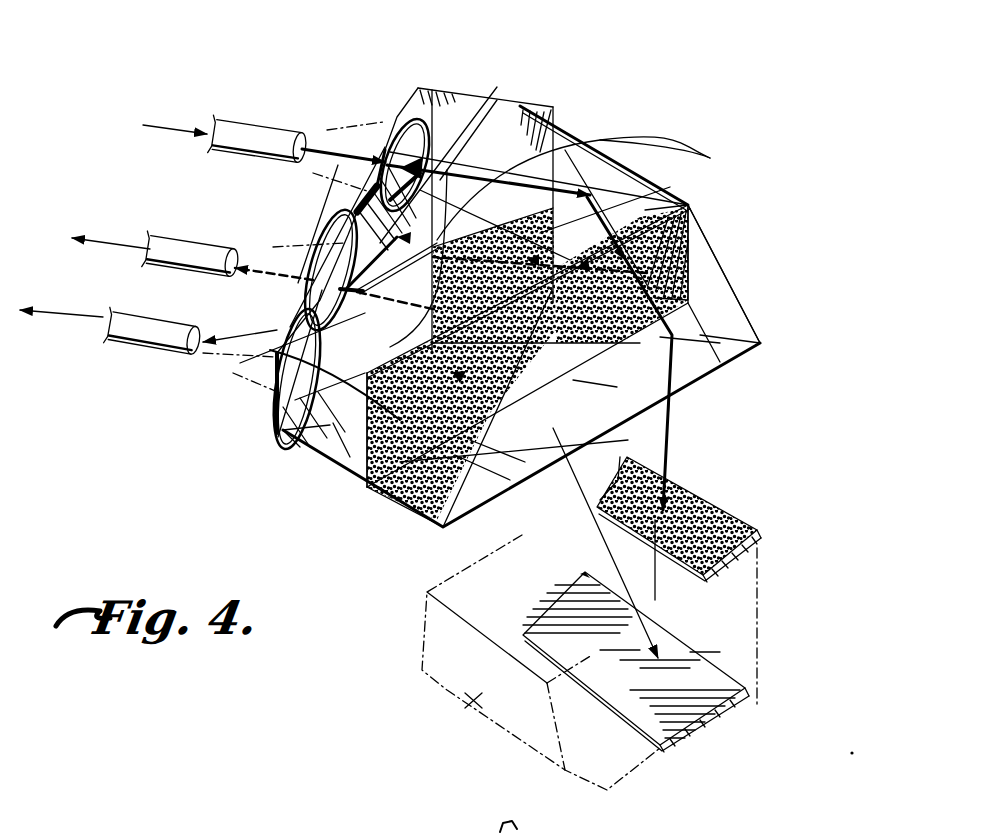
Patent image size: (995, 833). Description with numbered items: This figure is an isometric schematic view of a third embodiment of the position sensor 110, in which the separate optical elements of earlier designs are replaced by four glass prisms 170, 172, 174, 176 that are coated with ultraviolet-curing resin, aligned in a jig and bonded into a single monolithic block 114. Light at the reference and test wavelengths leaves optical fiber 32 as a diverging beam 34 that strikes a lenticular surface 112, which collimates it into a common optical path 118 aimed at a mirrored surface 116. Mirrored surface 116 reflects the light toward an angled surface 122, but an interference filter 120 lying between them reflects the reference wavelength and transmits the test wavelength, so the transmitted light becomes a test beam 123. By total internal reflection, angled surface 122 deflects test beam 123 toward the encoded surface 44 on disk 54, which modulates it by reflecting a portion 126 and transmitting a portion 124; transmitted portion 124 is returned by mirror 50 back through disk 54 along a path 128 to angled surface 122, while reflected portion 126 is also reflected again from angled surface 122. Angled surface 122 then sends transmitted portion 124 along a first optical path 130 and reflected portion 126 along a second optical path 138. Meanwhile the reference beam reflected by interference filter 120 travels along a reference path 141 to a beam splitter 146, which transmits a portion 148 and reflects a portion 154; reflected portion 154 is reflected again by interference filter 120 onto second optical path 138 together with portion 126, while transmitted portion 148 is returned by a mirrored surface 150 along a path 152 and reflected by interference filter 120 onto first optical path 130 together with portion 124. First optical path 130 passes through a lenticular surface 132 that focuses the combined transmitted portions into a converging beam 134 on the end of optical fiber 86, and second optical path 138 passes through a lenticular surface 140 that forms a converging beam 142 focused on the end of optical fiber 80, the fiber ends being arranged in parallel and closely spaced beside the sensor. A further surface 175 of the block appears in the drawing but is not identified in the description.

The position sensor 110 is at (705, 86).
The lenticular surface 112 is at (417, 105).
The monolithic block 114 is at (752, 290).
The mirrored surface 116 is at (660, 173).
The common optical path 118 is at (535, 120).
The interference filter 120 is at (697, 222).
The angled surface 122 is at (713, 280).
The test beam 123 is at (672, 414).
The transmitted portion of test beam 124 is at (657, 592).
The reflected portion of test beam 126 is at (650, 442).
The path 128 is at (600, 545).
The first optical path 130 is at (323, 430).
The lenticular surface 132 is at (293, 313).
The converging beam 134 is at (240, 383).
The second optical path 138 is at (440, 529).
The lenticular surface 140 is at (350, 233).
The reference path 141 is at (667, 197).
The converging beam 142 is at (270, 240).
The beam splitter 146 is at (630, 190).
The transmitted portion of reference beam 148 is at (600, 185).
The mirrored surface 150 is at (440, 180).
The path 152 is at (363, 450).
The reflected portion of reference beam 154 is at (712, 352).
The glass prism 170 is at (583, 133).
The glass prism 172 is at (279, 410).
The glass prism 174 is at (295, 447).
The right surface 175 is at (740, 343).
The glass prism 176 is at (398, 507).
The optical fiber 32 is at (253, 122).
The diverging beam 34 is at (357, 120).
The optical fiber 80 is at (190, 243).
The optical fiber 86 is at (157, 320).
The encoded surface 44 is at (755, 524).
The mirror 50 is at (733, 687).
The disk 54 is at (490, 693).